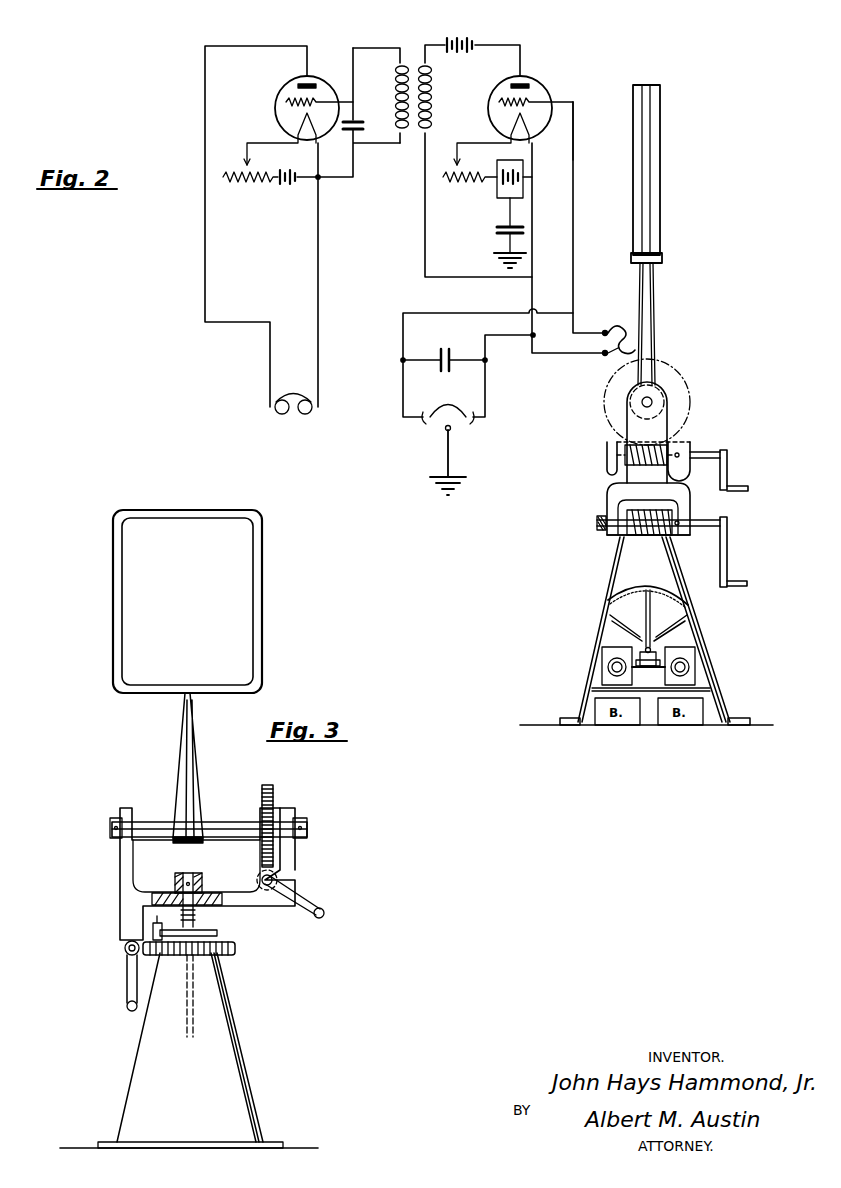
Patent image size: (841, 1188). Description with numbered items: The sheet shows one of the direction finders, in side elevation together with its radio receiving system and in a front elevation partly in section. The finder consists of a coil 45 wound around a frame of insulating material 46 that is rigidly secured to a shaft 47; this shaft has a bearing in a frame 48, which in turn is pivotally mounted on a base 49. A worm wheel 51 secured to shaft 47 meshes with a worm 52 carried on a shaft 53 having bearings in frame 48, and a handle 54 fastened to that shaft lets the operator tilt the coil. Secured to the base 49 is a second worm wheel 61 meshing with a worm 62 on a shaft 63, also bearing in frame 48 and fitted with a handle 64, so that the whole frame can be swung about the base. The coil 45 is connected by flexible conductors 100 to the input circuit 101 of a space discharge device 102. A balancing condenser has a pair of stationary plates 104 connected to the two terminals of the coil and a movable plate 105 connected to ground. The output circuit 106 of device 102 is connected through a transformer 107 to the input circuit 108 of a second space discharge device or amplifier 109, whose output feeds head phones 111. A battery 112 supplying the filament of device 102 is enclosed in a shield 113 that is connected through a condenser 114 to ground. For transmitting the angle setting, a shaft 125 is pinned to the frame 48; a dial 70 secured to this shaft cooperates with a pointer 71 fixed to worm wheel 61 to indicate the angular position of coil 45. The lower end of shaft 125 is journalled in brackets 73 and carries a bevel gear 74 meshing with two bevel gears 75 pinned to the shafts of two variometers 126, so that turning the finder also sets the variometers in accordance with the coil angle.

In FIG. 2, the coil 45 is at (648, 224).
In FIG. 3, the coil 45 is at (263, 632).
In FIG. 2, the frame of insulating material 46 is at (662, 158).
In FIG. 3, the frame of insulating material 46 is at (253, 643).
In FIG. 2, the shaft 47 is at (654, 401).
In FIG. 3, the shaft 47 is at (155, 828).
In FIG. 2, the frame 48 is at (666, 418).
In FIG. 3, the frame 48 is at (123, 873).
In FIG. 2, the base 49 is at (618, 580).
In FIG. 3, the base 49 is at (228, 1054).
In FIG. 2, the worm wheel 51 is at (680, 372).
In FIG. 3, the worm wheel 51 is at (275, 790).
In FIG. 2, the worm 52 is at (625, 458).
In FIG. 3, the worm 52 is at (257, 870).
In FIG. 2, the shaft 53 is at (710, 452).
In FIG. 3, the shaft 53 is at (275, 879).
In FIG. 2, the handle 54 is at (728, 475).
In FIG. 3, the handle 54 is at (322, 906).
In FIG. 2, the worm wheel 61 is at (597, 524).
In FIG. 3, the worm wheel 61 is at (237, 948).
In FIG. 2, the worm 62 is at (633, 538).
In FIG. 3, the worm 62 is at (127, 958).
In FIG. 2, the shaft 63 is at (712, 520).
In FIG. 3, the shaft 63 is at (126, 944).
In FIG. 2, the handle 64 is at (728, 562).
In FIG. 3, the handle 64 is at (127, 995).
In FIG. 3, the dial 70 is at (219, 934).
In FIG. 3, the pointer 71 is at (154, 921).
In FIG. 2, the brackets 73 is at (612, 630).
In FIG. 2, the bevel gear 74 is at (684, 628).
In FIG. 2, the bevel gears 75 is at (648, 669).
In FIG. 2, the flexible conductors 100 is at (613, 330).
In FIG. 2, the input circuit 101 is at (566, 160).
In FIG. 2, the space discharge device 102 is at (545, 84).
In FIG. 2, the stationary plates 104 is at (422, 421).
In FIG. 2, the movable plate 105 is at (440, 407).
In FIG. 2, the output circuit 106 is at (473, 98).
In FIG. 2, the transformer 107 is at (405, 58).
In FIG. 2, the input circuit 108 is at (392, 94).
In FIG. 2, the amplifier 109 is at (280, 91).
In FIG. 2, the head phones 111 is at (280, 418).
In FIG. 2, the battery 112 is at (503, 183).
In FIG. 2, the shield 113 is at (497, 196).
In FIG. 2, the condenser 114 is at (500, 240).
In FIG. 2, the shaft 125 is at (646, 607).
In FIG. 3, the shaft 125 is at (200, 922).
In FIG. 2, the variometers 126 is at (602, 680).